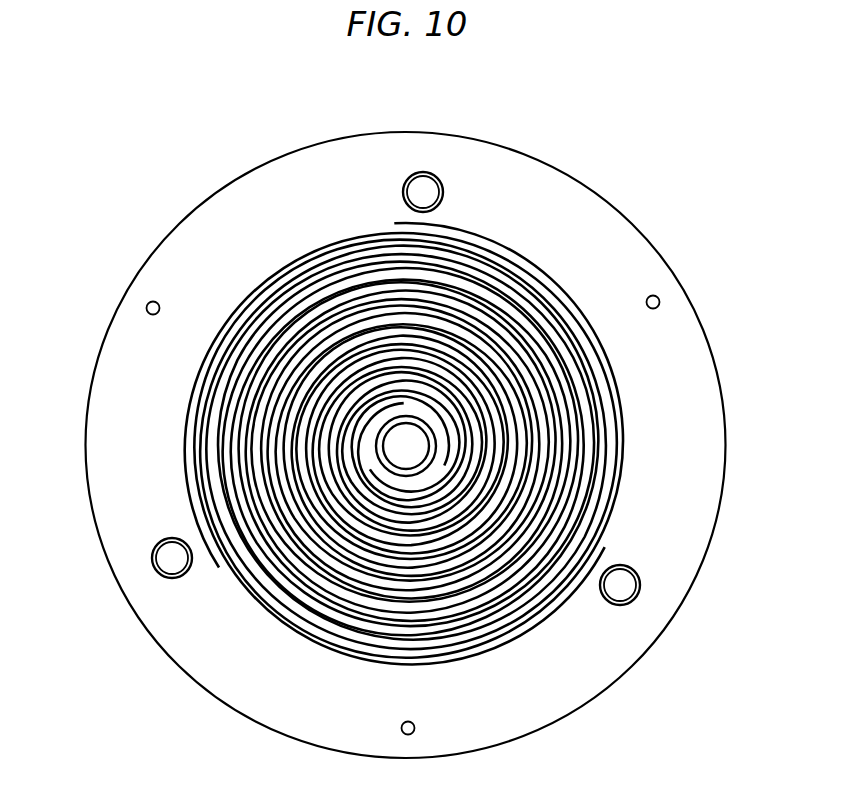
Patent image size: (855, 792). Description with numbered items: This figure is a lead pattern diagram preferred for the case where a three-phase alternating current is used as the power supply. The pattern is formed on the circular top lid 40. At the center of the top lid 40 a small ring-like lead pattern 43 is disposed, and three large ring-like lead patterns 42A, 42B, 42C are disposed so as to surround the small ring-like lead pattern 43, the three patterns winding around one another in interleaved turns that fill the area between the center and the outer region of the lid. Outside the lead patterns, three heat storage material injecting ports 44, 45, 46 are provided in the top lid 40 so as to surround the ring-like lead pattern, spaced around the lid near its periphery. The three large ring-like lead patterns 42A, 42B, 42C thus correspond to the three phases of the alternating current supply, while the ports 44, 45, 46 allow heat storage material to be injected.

The top lid 40 is at (667, 260).
The large ring-like lead pattern 42A is at (513, 638).
The large ring-like lead pattern 42B is at (183, 495).
The large ring-like lead pattern 42C is at (493, 238).
The small ring-like lead pattern 43 is at (452, 432).
The heat storage material injecting port 44 is at (420, 184).
The heat storage material injecting port 45 is at (623, 587).
The heat storage material injecting port 46 is at (172, 562).